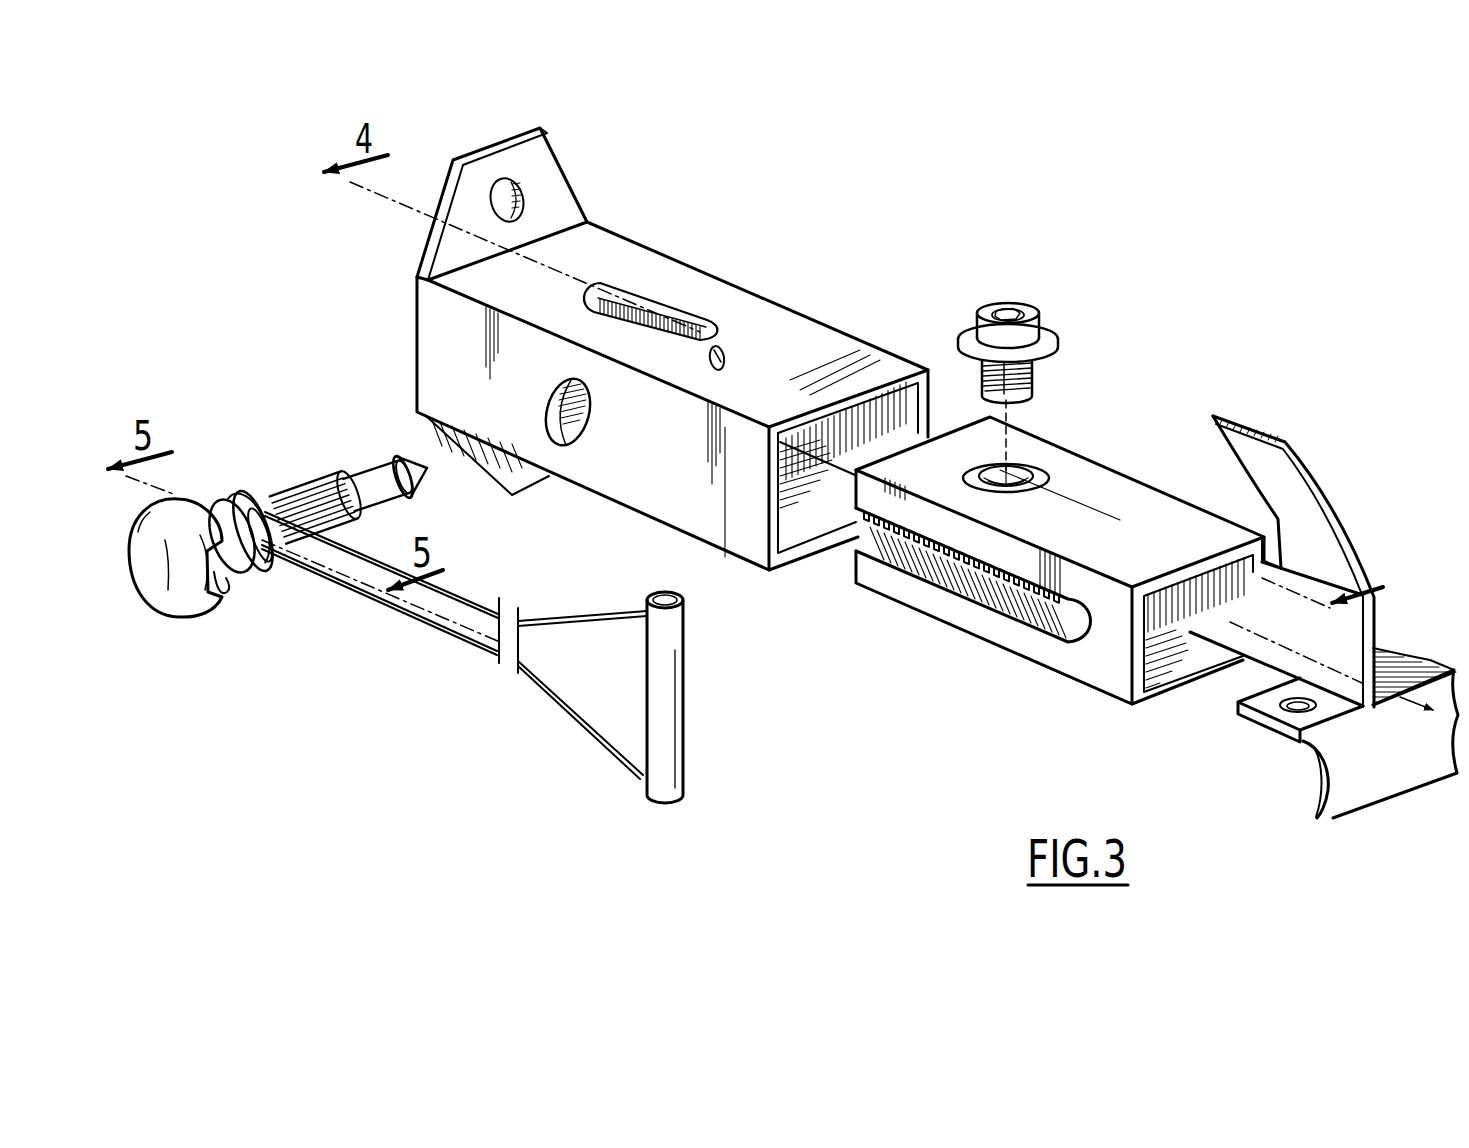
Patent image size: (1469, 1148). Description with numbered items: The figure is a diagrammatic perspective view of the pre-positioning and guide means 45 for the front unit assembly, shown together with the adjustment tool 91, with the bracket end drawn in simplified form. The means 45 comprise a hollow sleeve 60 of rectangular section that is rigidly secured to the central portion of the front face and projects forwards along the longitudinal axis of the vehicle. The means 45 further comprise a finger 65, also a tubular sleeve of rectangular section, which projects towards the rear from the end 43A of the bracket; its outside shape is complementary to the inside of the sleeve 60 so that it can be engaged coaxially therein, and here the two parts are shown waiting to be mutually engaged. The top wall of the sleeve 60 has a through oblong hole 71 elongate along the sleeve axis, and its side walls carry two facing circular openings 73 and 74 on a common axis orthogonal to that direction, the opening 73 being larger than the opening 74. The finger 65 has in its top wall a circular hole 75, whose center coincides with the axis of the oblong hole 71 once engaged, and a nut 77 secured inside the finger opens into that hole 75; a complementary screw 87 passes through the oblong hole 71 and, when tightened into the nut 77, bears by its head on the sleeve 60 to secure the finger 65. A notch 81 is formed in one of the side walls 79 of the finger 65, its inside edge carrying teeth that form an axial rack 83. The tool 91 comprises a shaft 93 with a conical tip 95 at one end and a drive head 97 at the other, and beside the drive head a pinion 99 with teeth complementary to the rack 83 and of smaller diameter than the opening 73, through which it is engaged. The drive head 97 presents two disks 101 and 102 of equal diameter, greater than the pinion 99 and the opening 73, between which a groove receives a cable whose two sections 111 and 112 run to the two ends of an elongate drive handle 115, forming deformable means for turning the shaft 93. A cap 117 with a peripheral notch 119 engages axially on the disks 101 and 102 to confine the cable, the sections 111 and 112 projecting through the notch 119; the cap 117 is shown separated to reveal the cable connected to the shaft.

The pre-positioning and guide means 45 is at (825, 603).
The hollow sleeve 60 is at (427, 352).
The oblong hole 71 is at (653, 311).
The circular opening 73 is at (592, 418).
The circular opening 74 is at (723, 350).
The finger 65 is at (1136, 490).
The circular hole 75 is at (1025, 469).
The nut 77 is at (1047, 481).
The side wall 79 is at (1097, 673).
The notch 81 is at (987, 607).
The axial rack 83 is at (913, 587).
The screw 87 is at (1054, 326).
The end of the bracket 43A is at (1397, 660).
The tool 91 is at (272, 412).
The shaft 93 is at (367, 483).
The conical tip 95 is at (423, 480).
The drive head 97 is at (207, 490).
The pinion 99 is at (307, 480).
The disk 101 is at (250, 503).
The disk 102 is at (243, 562).
The cap 117 is at (167, 603).
The peripheral notch 119 is at (226, 585).
The section of cable 111 is at (583, 617).
The section of cable 112 is at (587, 727).
The drive handle 115 is at (673, 690).